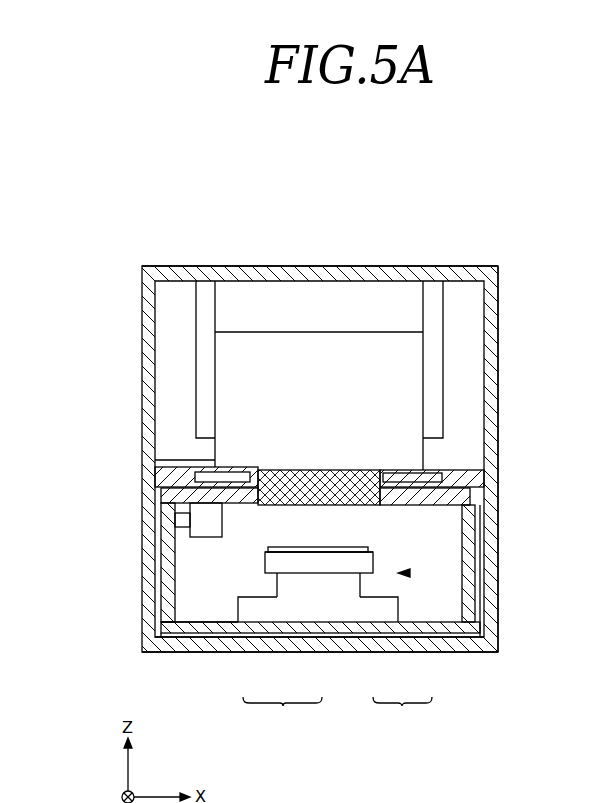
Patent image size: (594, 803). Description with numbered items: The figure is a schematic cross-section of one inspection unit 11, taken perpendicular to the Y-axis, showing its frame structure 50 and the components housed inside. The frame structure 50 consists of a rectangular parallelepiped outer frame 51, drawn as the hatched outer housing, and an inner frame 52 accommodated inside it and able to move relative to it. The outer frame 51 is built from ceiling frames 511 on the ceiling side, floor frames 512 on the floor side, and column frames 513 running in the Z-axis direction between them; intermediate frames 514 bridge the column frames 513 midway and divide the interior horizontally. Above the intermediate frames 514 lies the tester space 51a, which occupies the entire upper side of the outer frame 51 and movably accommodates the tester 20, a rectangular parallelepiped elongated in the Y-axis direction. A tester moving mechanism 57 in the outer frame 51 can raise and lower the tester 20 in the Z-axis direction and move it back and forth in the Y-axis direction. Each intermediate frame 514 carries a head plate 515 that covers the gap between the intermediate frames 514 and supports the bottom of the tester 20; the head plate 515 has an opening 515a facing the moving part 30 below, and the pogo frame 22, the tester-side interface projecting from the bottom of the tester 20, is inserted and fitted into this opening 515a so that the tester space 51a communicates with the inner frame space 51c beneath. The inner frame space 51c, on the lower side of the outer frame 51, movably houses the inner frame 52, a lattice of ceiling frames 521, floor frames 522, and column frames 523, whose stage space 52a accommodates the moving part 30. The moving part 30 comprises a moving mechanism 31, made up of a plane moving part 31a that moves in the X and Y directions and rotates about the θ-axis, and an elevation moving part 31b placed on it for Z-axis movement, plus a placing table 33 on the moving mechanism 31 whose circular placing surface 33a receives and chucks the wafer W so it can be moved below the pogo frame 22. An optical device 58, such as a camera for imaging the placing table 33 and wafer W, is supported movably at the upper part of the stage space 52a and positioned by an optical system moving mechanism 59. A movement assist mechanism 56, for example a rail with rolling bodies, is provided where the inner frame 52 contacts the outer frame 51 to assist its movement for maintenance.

The inspection unit 11 is at (157, 211).
The tester 20 is at (322, 350).
The ceiling frames 511 is at (457, 271).
The floor frames 512 is at (468, 640).
The column frames 513 is at (493, 363).
The outer frame 51 is at (418, 640).
The tester space 51a is at (467, 316).
The inner frame space 51c is at (472, 495).
The tester moving mechanism 57 is at (205, 379).
The pogo frame 22 is at (262, 478).
The ceiling frames 521 is at (205, 478).
The head plate 515 is at (430, 470).
The opening 515a is at (386, 469).
The intermediate frames 514 is at (465, 470).
The optical device 58 is at (205, 508).
The optical system moving mechanism 59 is at (190, 527).
The column frames 523 is at (172, 600).
The stage space 52a is at (438, 605).
The inner frame 52 is at (388, 623).
The movement assist mechanism 56 is at (171, 630).
The floor frames 522 is at (211, 628).
The frame structure 50 is at (402, 714).
The wafer W is at (368, 548).
The moving part 30 is at (408, 573).
The placing table 33 is at (348, 560).
The placing surface 33a is at (290, 549).
The moving mechanism 31 is at (282, 714).
The plane moving part 31a is at (262, 608).
The elevation moving part 31b is at (308, 587).